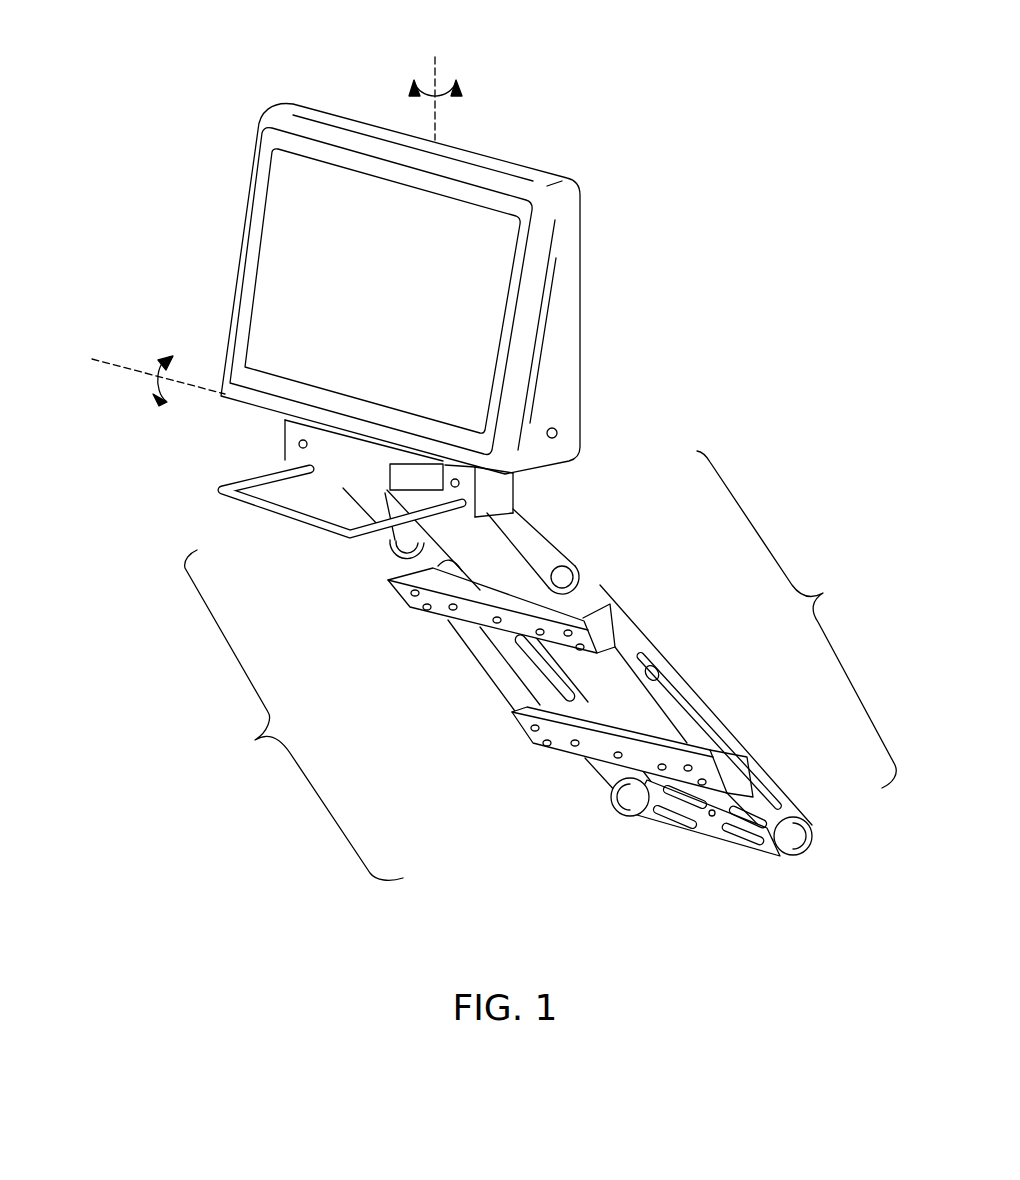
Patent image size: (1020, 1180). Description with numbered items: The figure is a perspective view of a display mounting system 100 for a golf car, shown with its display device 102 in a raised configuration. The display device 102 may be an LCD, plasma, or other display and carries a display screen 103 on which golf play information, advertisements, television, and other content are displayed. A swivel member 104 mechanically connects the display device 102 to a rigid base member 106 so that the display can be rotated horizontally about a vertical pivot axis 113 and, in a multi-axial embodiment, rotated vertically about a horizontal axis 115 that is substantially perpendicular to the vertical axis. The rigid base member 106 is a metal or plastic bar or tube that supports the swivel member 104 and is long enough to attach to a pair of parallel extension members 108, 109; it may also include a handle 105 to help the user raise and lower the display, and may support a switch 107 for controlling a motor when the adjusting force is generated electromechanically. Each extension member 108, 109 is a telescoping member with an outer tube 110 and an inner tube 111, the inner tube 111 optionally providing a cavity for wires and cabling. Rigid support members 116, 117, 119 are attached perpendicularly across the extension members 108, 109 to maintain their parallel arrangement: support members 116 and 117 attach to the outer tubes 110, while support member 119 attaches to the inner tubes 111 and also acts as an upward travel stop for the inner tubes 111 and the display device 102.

The display mounting system 100 is at (753, 223).
The display device 102 is at (566, 360).
The display screen 103 is at (290, 293).
The swivel member 104 is at (418, 454).
The handle 105 is at (221, 502).
The rigid base member 106 is at (290, 455).
The switch 107 is at (437, 487).
The extension member 108 is at (796, 619).
The extension member 109 is at (294, 715).
The outer tube 110 is at (600, 584).
The inner tube 111 is at (370, 506).
The vertical pivot axis 113 is at (437, 68).
The horizontal axis 115 is at (125, 362).
The rigid support member 116 is at (442, 608).
The rigid support member 117 is at (565, 743).
The rigid support member 119 is at (697, 827).